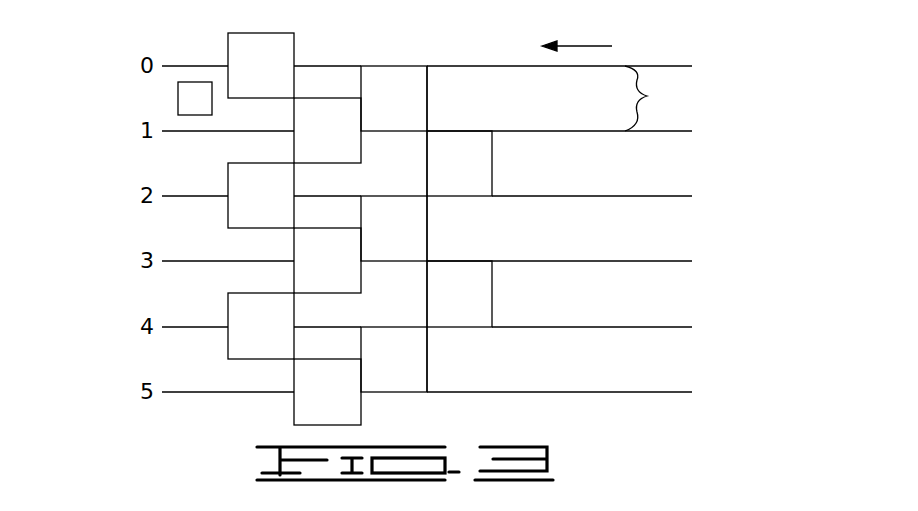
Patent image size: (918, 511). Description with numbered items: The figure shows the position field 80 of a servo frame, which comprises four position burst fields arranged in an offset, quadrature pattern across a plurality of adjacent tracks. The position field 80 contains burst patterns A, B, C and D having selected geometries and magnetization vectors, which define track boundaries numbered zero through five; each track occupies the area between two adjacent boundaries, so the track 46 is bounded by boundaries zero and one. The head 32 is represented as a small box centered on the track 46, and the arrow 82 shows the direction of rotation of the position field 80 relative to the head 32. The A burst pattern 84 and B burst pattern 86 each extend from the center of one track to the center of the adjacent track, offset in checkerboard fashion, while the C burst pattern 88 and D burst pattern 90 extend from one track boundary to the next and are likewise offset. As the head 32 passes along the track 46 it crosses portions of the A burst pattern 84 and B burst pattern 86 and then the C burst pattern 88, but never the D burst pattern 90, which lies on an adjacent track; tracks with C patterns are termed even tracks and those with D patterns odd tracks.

The position field 80 is at (418, 43).
The arrow 82 is at (593, 47).
The A burst pattern 84 is at (257, 43).
The B burst pattern 86 is at (345, 153).
The C burst pattern 88 is at (384, 120).
The D burst pattern 90 is at (470, 187).
The track 46 is at (658, 93).
The head 32 is at (188, 101).